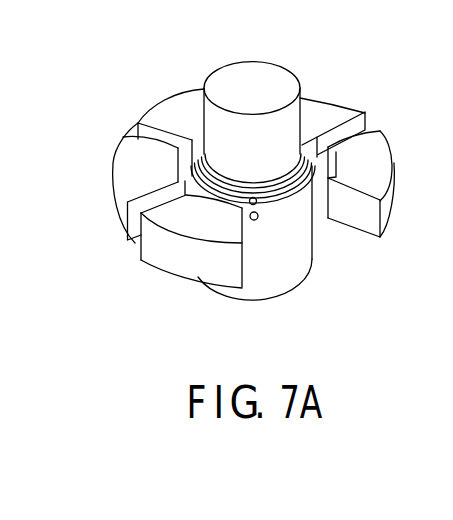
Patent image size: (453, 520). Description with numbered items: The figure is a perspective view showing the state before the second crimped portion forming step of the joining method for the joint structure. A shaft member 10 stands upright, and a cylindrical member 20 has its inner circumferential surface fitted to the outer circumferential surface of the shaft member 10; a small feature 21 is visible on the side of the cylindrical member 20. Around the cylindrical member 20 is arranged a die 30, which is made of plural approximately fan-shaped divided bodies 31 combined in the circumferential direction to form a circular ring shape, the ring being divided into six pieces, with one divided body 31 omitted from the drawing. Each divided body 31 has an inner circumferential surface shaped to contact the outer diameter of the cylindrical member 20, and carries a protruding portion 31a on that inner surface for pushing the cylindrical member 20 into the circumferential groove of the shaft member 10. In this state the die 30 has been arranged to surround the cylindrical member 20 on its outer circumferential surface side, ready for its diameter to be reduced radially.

The shaft member 10 is at (252, 78).
The cylindrical member 20 is at (284, 267).
The hole 21 is at (258, 219).
The die 30 is at (103, 252).
The divided body 31 is at (177, 106).
The protruding portion 31a is at (365, 110).